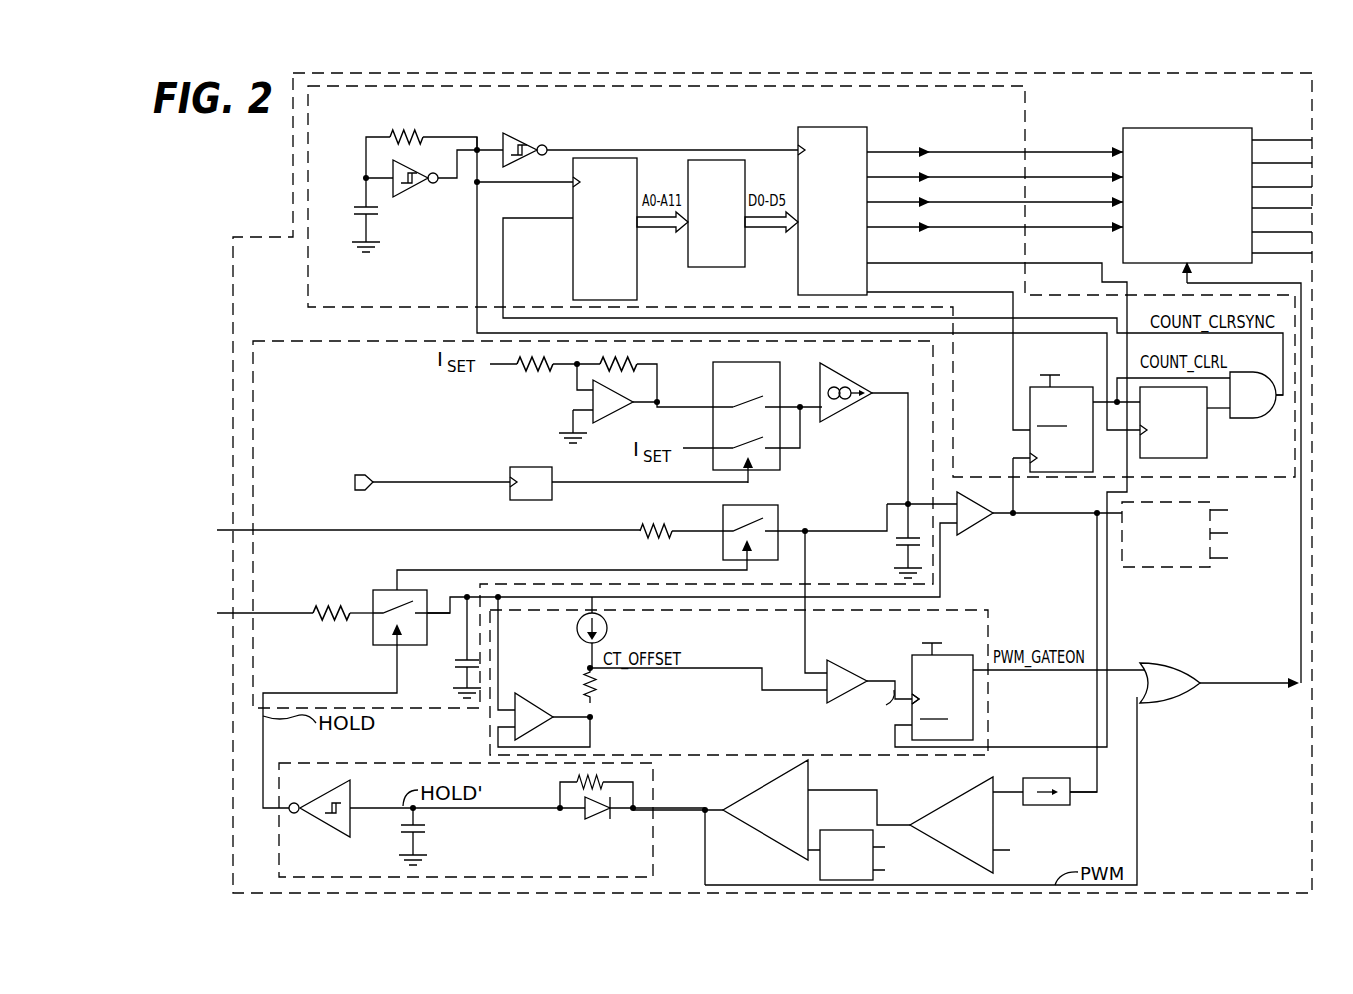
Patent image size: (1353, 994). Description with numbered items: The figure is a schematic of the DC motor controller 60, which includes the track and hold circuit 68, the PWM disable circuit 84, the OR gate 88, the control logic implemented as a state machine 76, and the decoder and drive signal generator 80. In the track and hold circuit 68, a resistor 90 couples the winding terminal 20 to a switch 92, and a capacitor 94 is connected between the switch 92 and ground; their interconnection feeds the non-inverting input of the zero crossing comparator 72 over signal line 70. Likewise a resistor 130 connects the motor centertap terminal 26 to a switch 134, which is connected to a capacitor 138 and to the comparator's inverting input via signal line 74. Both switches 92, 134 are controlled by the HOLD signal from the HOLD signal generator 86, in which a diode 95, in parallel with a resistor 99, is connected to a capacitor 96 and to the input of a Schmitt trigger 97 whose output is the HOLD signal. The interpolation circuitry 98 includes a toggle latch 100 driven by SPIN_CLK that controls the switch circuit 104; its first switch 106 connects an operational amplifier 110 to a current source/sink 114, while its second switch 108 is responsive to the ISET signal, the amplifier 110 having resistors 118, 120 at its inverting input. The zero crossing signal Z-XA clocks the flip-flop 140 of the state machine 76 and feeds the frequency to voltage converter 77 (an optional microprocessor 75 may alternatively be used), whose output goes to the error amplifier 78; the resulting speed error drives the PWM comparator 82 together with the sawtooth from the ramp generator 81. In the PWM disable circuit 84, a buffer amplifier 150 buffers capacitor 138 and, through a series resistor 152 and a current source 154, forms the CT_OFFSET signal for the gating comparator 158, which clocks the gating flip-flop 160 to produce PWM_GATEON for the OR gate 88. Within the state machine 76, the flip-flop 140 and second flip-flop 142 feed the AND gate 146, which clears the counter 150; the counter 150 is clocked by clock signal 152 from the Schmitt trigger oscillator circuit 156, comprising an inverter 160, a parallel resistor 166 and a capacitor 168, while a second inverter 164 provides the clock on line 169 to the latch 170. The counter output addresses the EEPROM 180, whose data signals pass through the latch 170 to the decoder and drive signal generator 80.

The winding terminal 20 is at (385, 529).
The motor centertap terminal 26 is at (221, 617).
The motor controller 60 is at (1312, 865).
The track and hold circuit 68 is at (305, 338).
The signal line 70 is at (788, 505).
The zero crossing comparator 72 is at (962, 493).
The signal line 74 is at (945, 586).
The microprocessor 75 is at (1160, 567).
The state machine 76 is at (1030, 90).
The frequency to voltage converter 77 is at (1058, 805).
The error amplifier 78 is at (968, 793).
The decoder and drive signal generator 80 is at (1203, 128).
The ramp generator 81 is at (857, 830).
The PWM comparator 82 is at (772, 845).
The PWM disable circuit 84 is at (990, 612).
The HOLD signal generator 86 is at (279, 833).
The OR gate 88 is at (1155, 663).
The resistor 90 is at (643, 527).
The switch 92 is at (725, 517).
The capacitor 94 is at (898, 541).
The diode 95 is at (580, 815).
The capacitor 96 is at (403, 834).
The Schmitt trigger 97 is at (352, 783).
The interpolation circuitry 98 is at (813, 367).
The resistor 99 is at (565, 777).
The toggle latch 100 is at (510, 472).
The dual pole, single throw switch circuit 104 is at (780, 462).
The first switch 106 is at (745, 403).
The second switch 108 is at (745, 444).
The operational amplifier 110 is at (573, 410).
The current source/sink 114 is at (855, 372).
The first resistor 118 is at (550, 372).
The second resistor 120 is at (637, 364).
The resistor 130 is at (313, 612).
The switch 134 is at (385, 590).
The capacitor 138 is at (455, 662).
The flip-flop 140 is at (1030, 400).
The second flip-flop 142 is at (1207, 447).
The AND gate 146 is at (1242, 372).
The counter 150 is at (573, 278).
The clock signal 152 is at (548, 183).
The current source 154 is at (577, 628).
The Schmitt trigger oscillator circuit 156 is at (441, 195).
The gating comparator 158 is at (838, 660).
The gating flip-flop 160 is at (366, 176).
The second inverter 164 is at (518, 133).
The resistor 166 is at (412, 132).
The capacitor 168 is at (356, 212).
The line 169 is at (675, 150).
The latch 170 is at (798, 290).
The EEPROM 180 is at (727, 268).